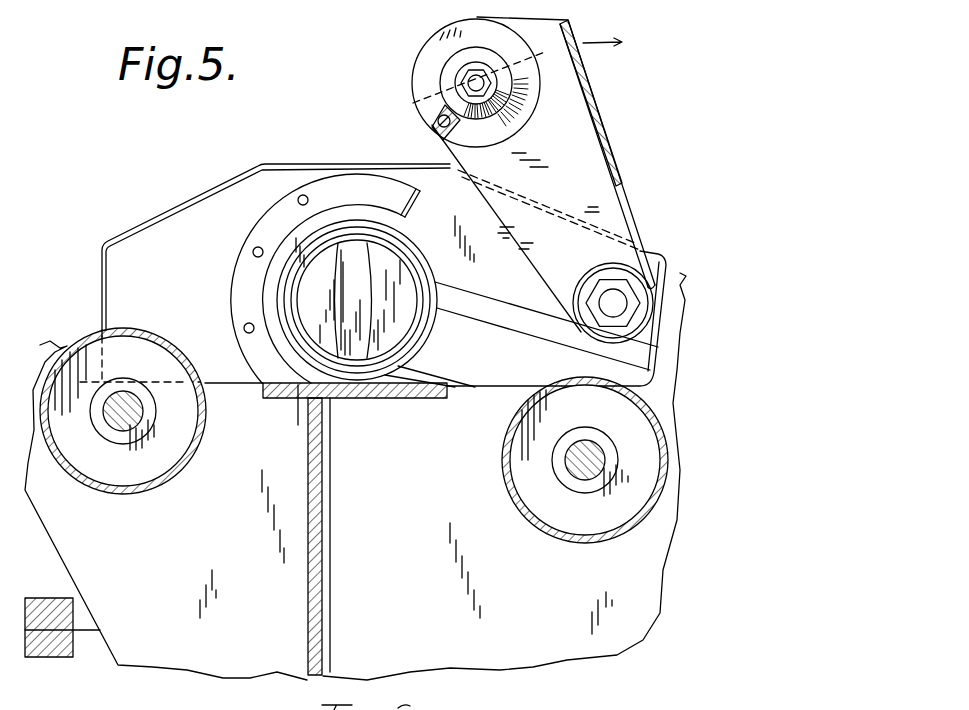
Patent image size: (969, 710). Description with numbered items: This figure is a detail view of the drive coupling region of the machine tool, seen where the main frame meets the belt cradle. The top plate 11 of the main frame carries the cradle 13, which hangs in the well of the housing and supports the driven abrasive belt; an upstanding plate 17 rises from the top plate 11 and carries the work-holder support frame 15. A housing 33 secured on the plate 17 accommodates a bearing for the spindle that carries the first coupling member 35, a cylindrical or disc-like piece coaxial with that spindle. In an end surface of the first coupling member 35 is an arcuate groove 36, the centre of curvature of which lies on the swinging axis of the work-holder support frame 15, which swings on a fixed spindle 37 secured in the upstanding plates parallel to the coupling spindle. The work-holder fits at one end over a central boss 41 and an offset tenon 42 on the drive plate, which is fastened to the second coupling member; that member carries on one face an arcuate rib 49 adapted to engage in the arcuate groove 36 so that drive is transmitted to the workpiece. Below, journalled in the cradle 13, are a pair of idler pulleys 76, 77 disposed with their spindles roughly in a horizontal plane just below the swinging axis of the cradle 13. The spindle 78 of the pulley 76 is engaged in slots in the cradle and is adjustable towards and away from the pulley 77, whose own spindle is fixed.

The top plate 11 is at (40, 607).
The cradle 13 is at (500, 657).
The work-holder support frame 15 is at (606, 134).
The upstanding plate 17 is at (200, 217).
The housing 33 is at (268, 307).
The first coupling member 35 is at (310, 288).
The arcuate groove 36 is at (357, 253).
The fixed spindle 37 is at (613, 303).
The central boss 41 is at (452, 80).
The offset tenon 42 is at (432, 114).
The arcuate rib 49 is at (428, 92).
The idler pulley 76 is at (168, 478).
The idler pulley 77 is at (540, 532).
The spindle 78 is at (120, 428).